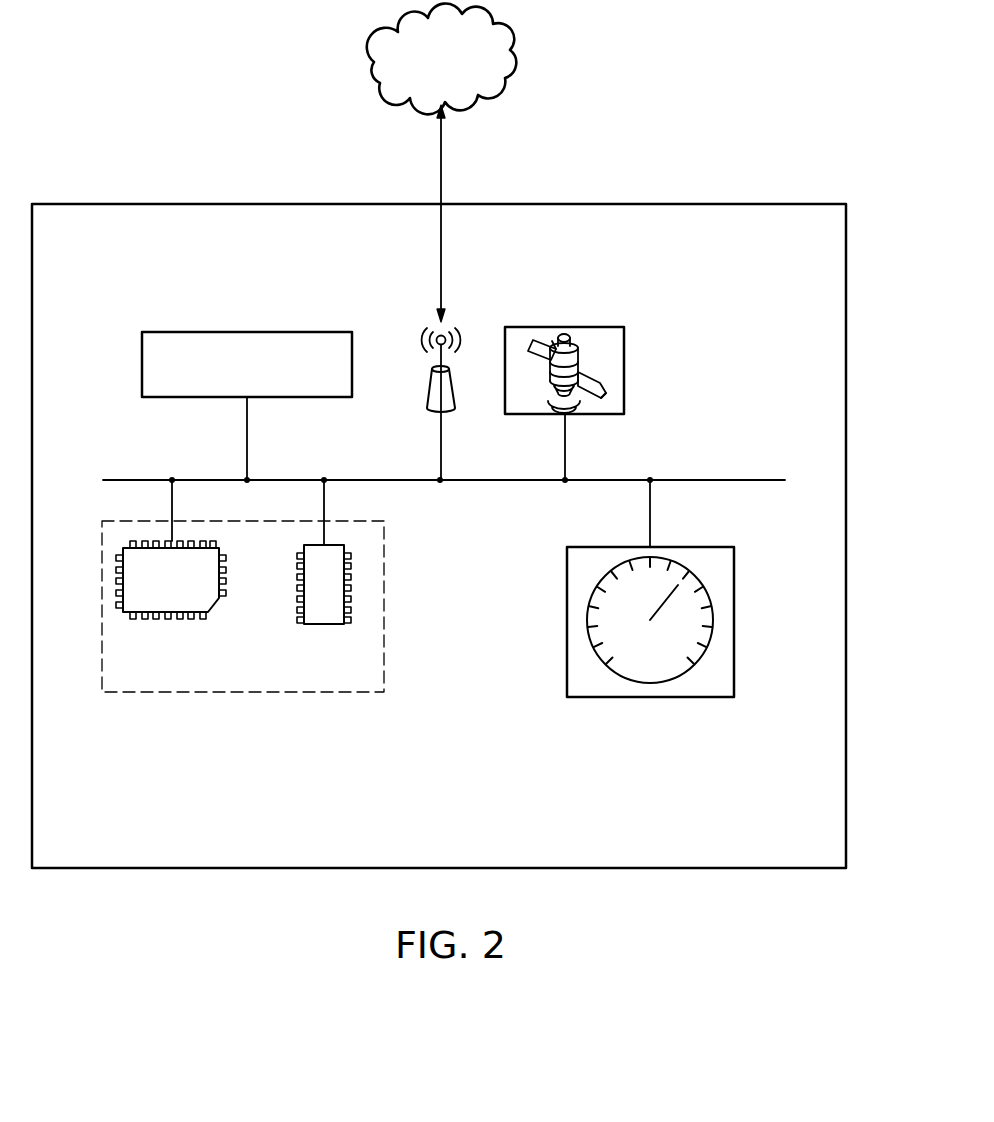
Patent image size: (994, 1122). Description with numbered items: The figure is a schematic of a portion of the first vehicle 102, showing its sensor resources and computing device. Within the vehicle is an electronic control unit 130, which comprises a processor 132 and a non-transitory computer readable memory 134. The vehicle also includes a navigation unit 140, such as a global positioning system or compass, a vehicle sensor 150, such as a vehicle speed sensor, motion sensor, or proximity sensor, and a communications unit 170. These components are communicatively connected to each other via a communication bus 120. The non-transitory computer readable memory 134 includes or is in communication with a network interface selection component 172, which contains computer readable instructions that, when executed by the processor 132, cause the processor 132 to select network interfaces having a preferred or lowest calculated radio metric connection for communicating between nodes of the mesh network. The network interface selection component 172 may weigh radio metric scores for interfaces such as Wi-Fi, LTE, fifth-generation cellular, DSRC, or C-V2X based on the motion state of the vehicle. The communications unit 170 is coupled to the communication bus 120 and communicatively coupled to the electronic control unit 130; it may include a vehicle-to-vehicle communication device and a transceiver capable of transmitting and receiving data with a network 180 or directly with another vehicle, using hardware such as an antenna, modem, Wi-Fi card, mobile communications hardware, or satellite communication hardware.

The first vehicle 102 is at (846, 228).
The communication bus 120 is at (152, 480).
The electronic control unit 130 is at (384, 672).
The processor 132 is at (214, 606).
The non-transitory computer readable memory 134 is at (324, 624).
The navigation unit 140 is at (565, 327).
The vehicle sensor 150 is at (650, 697).
The communications unit 170 is at (432, 378).
The network interface selection component 172 is at (247, 332).
The network 180 is at (370, 60).